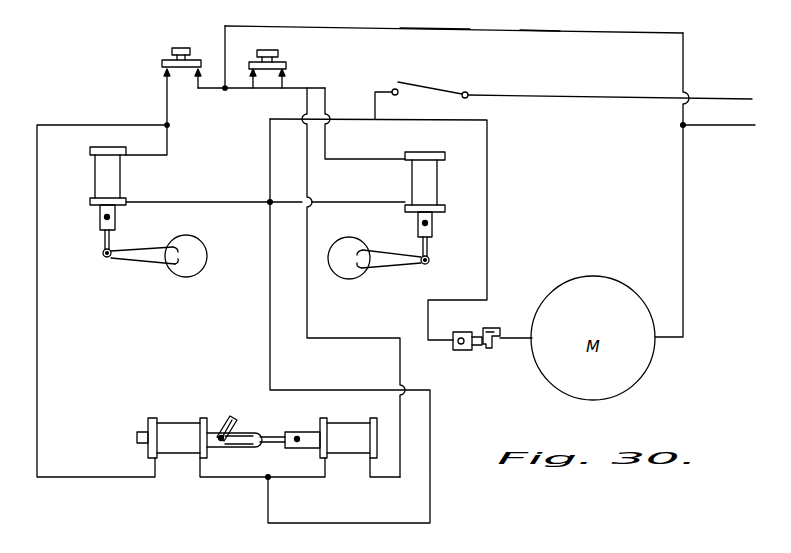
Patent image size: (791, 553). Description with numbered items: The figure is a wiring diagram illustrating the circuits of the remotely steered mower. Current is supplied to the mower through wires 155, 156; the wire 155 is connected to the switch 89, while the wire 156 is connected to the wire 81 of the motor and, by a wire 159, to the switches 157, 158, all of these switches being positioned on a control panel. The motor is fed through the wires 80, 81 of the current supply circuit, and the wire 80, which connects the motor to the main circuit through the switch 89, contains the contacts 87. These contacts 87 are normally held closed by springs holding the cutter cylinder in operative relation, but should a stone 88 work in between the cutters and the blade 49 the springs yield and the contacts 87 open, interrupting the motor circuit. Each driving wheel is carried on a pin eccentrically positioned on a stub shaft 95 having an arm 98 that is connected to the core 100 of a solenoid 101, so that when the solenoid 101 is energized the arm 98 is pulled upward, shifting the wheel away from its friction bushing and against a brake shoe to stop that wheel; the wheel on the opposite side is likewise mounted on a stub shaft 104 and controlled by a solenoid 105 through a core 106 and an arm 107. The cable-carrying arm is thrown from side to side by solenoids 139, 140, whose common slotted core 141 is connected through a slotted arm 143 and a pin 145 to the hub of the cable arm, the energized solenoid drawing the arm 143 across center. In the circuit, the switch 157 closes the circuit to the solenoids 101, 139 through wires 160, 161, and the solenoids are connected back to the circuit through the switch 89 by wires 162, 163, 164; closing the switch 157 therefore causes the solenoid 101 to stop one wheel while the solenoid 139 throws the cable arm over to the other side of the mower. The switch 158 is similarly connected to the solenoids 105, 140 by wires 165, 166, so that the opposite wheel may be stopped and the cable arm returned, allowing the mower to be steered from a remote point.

The blade 49 is at (450, 16).
The stone 88 is at (540, 15).
The wire 159 is at (445, 21).
The switch 157 is at (162, 63).
The switch 158 is at (287, 66).
The wire 160 is at (87, 125).
The wire 161 is at (168, 155).
The wire 162 is at (230, 202).
The wire 163 is at (268, 320).
The wire 164 is at (256, 480).
The wire 165 is at (369, 159).
The wire 166 is at (361, 338).
The wire 80 is at (488, 197).
The wire 81 is at (684, 290).
The switch 89 is at (460, 92).
The wire 155 is at (740, 85).
The wire 156 is at (742, 127).
The contacts 87 is at (472, 351).
The solenoid 101 is at (97, 180).
The core 100 is at (102, 227).
The arm 98 is at (149, 250).
The stub shaft 95 is at (200, 257).
The solenoid 105 is at (433, 178).
The core 106 is at (435, 228).
The arm 107 is at (389, 256).
The stub shaft 104 is at (355, 273).
The solenoid 139 is at (166, 428).
The solenoid 140 is at (352, 432).
The core 141 is at (311, 434).
The arm 143 is at (235, 414).
The pin 145 is at (217, 444).